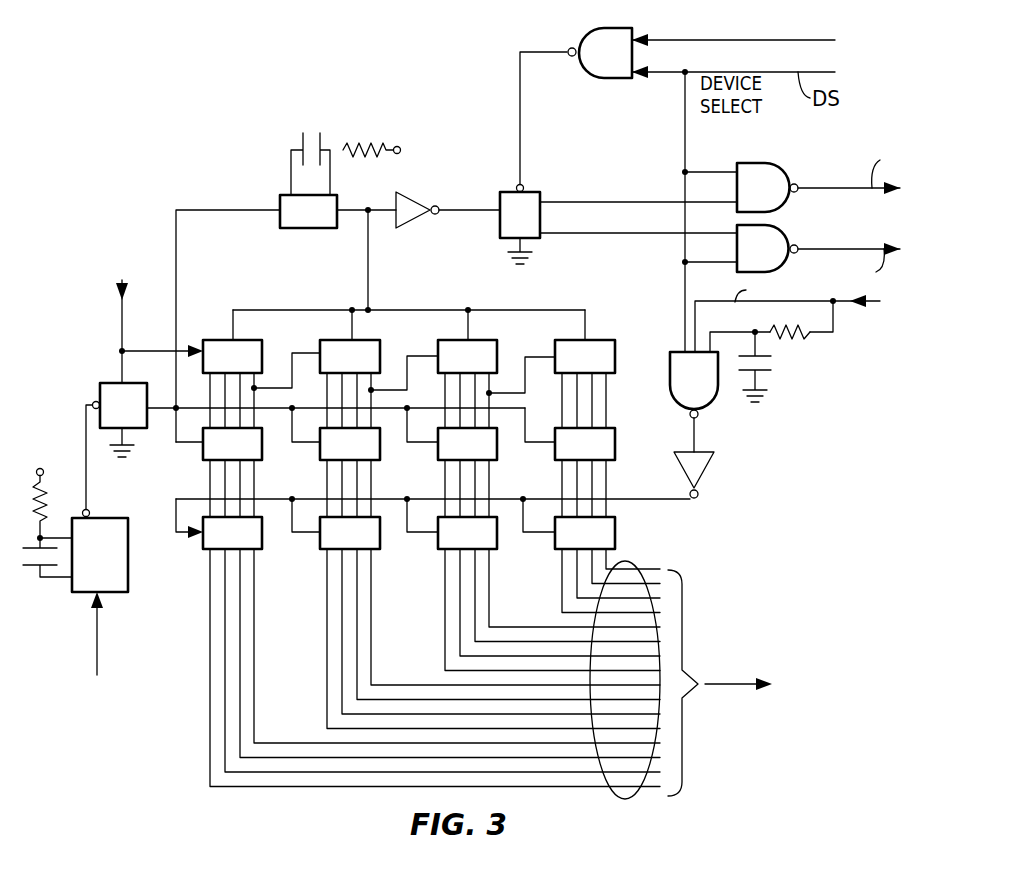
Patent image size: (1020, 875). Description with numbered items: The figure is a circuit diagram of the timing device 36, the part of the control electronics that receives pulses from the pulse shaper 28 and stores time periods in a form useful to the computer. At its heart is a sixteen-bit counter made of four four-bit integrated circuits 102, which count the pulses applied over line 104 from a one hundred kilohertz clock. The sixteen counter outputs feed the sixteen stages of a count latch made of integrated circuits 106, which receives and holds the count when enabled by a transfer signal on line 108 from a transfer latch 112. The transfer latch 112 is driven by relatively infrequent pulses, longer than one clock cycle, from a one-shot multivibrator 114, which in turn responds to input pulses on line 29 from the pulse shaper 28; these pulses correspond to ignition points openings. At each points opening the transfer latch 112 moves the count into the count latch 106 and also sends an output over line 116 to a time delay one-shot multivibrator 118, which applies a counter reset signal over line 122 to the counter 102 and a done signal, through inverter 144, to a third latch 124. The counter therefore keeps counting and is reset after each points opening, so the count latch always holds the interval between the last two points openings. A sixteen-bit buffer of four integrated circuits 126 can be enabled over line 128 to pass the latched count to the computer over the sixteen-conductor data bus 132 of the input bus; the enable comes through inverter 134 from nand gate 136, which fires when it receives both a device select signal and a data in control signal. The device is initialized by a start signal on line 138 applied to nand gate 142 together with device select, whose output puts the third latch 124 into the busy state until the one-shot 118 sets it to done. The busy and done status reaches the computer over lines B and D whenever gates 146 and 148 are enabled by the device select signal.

The timing device 36 is at (284, 93).
The 4-bit integrated circuits 102 is at (409, 367).
The count latch integrated circuits 106 is at (409, 472).
The buffer integrated circuits 126 is at (409, 552).
The clock line 104 is at (122, 342).
The transfer latch 112 is at (106, 398).
The transfer signal line 108 is at (160, 412).
The one-shot multivibrator 114 is at (128, 575).
The input pulse line 29 is at (98, 634).
The pulse shaper 28 is at (96, 731).
The output line 116 is at (176, 262).
The time delay one-shot multivibrator 118 is at (308, 211).
The counter reset line 122 is at (368, 272).
The third latch 124 is at (528, 192).
The inverter 144 is at (405, 228).
The nand gate 142 is at (607, 68).
The start line 138 is at (652, 28).
The gate 146 is at (790, 152).
The gate 148 is at (785, 268).
The nand gate 136 is at (674, 368).
The inverter 134 is at (703, 476).
The buffer enable line 128 is at (683, 503).
The data bus 132 is at (658, 560).